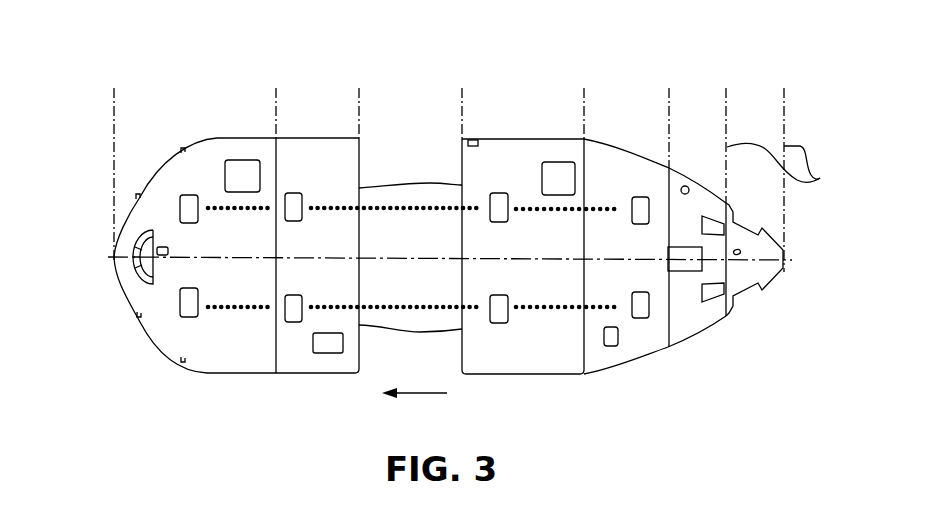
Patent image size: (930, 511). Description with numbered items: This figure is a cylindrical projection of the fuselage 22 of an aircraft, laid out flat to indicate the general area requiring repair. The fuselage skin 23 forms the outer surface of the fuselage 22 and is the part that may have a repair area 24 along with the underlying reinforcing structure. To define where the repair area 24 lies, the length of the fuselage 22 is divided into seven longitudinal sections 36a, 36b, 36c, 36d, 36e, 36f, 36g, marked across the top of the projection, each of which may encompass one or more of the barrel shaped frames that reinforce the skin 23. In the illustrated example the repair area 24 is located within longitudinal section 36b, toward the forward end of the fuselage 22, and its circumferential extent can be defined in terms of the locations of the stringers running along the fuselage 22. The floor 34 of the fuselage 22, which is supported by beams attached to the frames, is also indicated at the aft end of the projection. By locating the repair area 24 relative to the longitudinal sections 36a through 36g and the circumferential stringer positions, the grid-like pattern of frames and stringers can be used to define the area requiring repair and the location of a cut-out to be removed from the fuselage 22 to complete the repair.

The fuselage 22 is at (92, 228).
The fuselage skin 23 is at (229, 345).
The repair area 24 is at (320, 388).
The floor 34 is at (820, 178).
The longitudinal section 36a is at (114, 85).
The longitudinal section 36b is at (276, 85).
The longitudinal section 36c is at (359, 85).
The longitudinal section 36d is at (462, 85).
The longitudinal section 36e is at (584, 85).
The longitudinal section 36f is at (669, 85).
The longitudinal section 36g is at (726, 85).